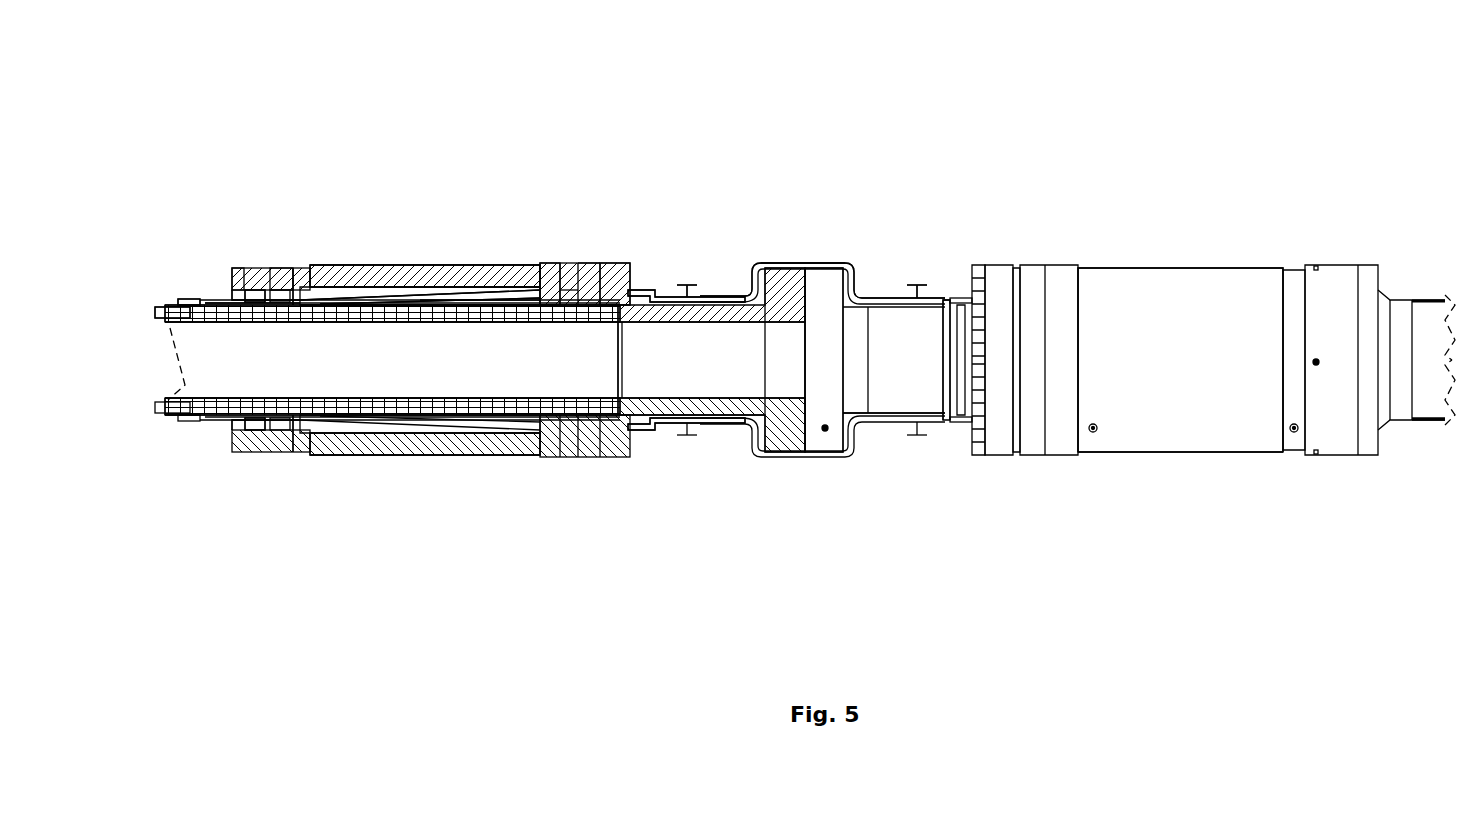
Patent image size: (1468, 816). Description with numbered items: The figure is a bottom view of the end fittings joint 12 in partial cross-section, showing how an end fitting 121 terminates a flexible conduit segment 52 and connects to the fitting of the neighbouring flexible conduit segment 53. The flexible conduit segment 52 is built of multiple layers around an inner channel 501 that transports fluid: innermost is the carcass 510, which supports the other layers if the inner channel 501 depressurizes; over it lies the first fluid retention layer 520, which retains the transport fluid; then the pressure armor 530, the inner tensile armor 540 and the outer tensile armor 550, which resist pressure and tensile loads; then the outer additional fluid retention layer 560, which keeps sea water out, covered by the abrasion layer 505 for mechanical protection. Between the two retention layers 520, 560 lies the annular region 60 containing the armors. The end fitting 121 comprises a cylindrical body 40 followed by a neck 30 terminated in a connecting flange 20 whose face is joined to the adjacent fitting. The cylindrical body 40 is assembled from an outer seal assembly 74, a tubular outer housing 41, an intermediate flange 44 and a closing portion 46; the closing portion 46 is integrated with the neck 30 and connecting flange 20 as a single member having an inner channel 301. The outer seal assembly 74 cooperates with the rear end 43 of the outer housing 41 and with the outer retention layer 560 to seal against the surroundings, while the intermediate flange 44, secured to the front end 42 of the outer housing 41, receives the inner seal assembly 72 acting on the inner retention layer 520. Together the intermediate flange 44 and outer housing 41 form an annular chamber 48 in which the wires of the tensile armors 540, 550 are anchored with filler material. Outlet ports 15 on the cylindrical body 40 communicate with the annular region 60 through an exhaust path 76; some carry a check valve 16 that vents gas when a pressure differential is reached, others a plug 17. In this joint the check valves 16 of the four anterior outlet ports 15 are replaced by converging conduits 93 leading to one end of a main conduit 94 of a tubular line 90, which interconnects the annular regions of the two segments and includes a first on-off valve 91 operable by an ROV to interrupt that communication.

The end fittings joint 12 is at (802, 133).
The abrasion layer 505 is at (180, 301).
The additional fluid retention layer 560 is at (208, 305).
The annular region 60 is at (155, 312).
The outer seal assembly 74 is at (232, 267).
The check valve 16 is at (236, 282).
The outlet port 15 is at (262, 288).
The rear end 43 is at (280, 268).
The plug 17 is at (294, 268).
The cylindrical body 40 is at (362, 263).
The outer housing 41 is at (385, 266).
The outer tensile armor 550 is at (427, 292).
The annular chamber 48 is at (449, 286).
The inner tensile armor 540 is at (462, 300).
The exhaust path 76 is at (512, 286).
The front end 42 is at (558, 278).
The inner seal assembly 72 is at (573, 289).
The intermediate flange 44 is at (590, 264).
The closing portion 46 is at (613, 264).
The converging conduit 93 is at (660, 290).
The first on-off valve 91 is at (690, 284).
The main conduit 94 is at (790, 268).
The tubular line 90 is at (834, 262).
The inner channel 501 is at (392, 360).
The pressure armor 530 is at (393, 318).
The first fluid retention layer 520 is at (463, 306).
The carcass 510 is at (506, 320).
The inner channel 301 is at (712, 360).
The flexible conduit segment 52 is at (183, 425).
The end fitting 121 is at (455, 478).
The neck 30 is at (705, 412).
The connecting flange 20 is at (780, 440).
The flexible conduit segment 53 is at (1422, 418).